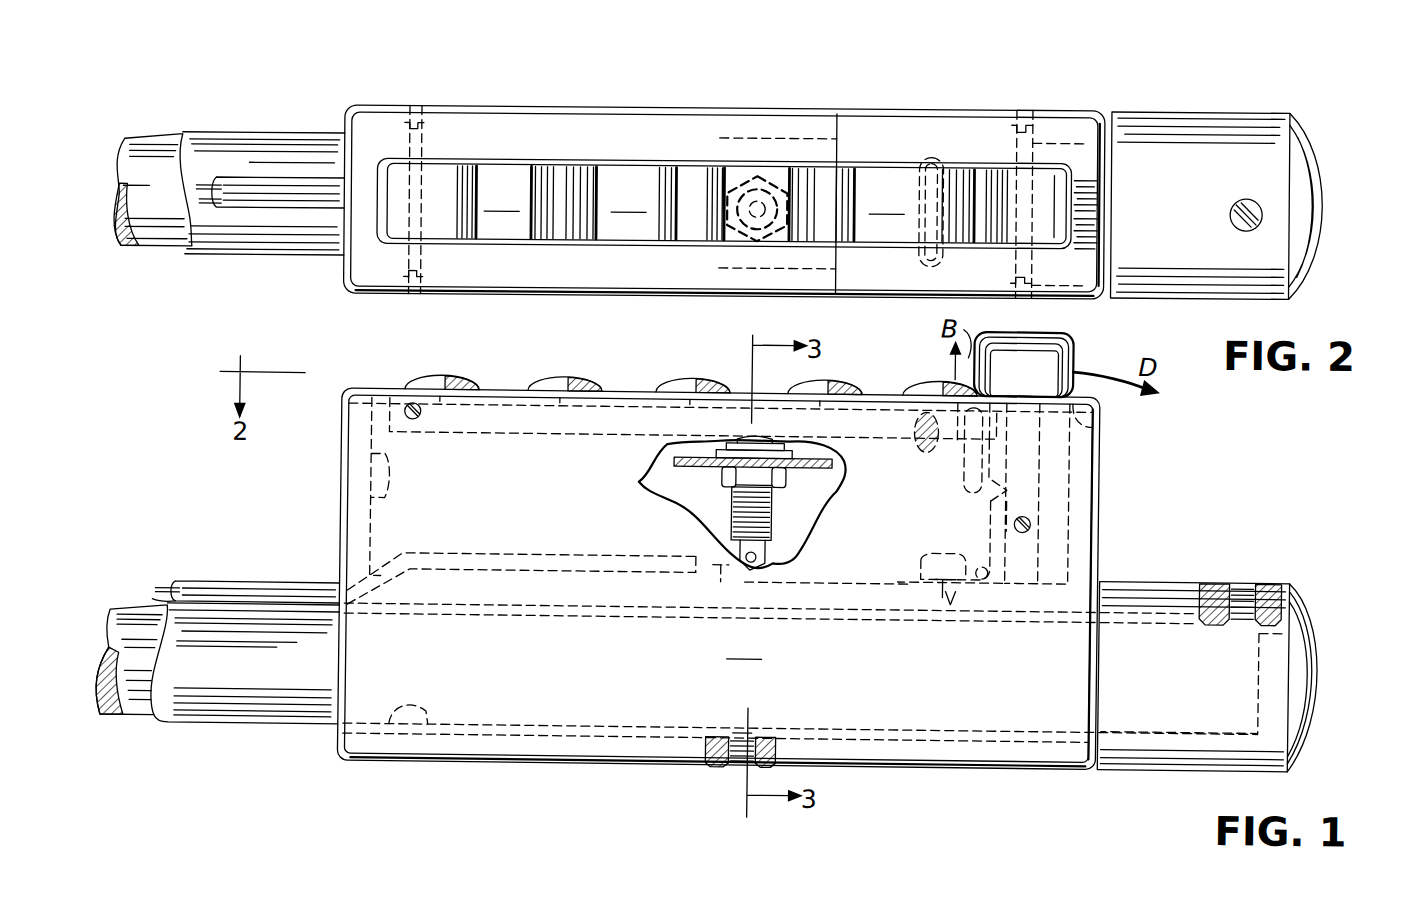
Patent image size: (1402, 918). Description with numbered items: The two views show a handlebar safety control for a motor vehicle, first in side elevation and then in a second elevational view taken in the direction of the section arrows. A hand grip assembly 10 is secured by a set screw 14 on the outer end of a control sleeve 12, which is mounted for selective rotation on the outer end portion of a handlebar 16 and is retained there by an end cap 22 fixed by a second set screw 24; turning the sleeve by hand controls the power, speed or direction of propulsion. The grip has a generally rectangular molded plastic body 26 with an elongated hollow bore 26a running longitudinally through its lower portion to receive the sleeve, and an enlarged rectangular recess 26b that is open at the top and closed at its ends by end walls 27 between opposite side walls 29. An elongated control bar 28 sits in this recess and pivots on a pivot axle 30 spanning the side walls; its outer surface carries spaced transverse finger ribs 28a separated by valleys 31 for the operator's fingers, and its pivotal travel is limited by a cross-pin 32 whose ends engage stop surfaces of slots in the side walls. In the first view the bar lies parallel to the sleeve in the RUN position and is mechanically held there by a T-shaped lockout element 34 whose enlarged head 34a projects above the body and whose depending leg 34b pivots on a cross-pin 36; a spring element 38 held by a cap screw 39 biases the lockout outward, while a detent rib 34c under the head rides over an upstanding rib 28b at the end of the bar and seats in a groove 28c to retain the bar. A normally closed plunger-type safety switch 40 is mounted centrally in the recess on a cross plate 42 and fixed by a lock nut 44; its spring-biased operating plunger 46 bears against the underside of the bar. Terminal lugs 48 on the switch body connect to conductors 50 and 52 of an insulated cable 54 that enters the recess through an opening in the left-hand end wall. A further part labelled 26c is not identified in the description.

In FIG. 2, the hand grip assembly 10 is at (960, 108).
In FIG. 1, the hand grip assembly 10 is at (1100, 510).
In FIG. 2, the control sleeve 12 is at (200, 257).
In FIG. 1, the control sleeve 12 is at (200, 724).
In FIG. 1, the set screw 14 is at (742, 765).
In FIG. 2, the handlebar 16 is at (148, 165).
In FIG. 1, the handlebar 16 is at (137, 700).
In FIG. 2, the end cap 22 is at (1310, 210).
In FIG. 1, the end cap 22 is at (1312, 645).
In FIG. 2, the set screw 24 is at (1262, 205).
In FIG. 1, the set screw 24 is at (1250, 575).
In FIG. 2, the body 26 is at (620, 110).
In FIG. 1, the body 26 is at (799, 580).
In FIG. 1, the hollow bore 26a is at (432, 767).
In FIG. 2, the recess 26b is at (888, 112).
In FIG. 1, the recess 26b is at (373, 500).
In FIG. 1, the housing contact 26c is at (918, 442).
In FIG. 2, the end walls 27 is at (363, 192).
In FIG. 1, the end walls 27 is at (390, 473).
In FIG. 2, the control bar 28 is at (958, 180).
In FIG. 2, the finger ribs 28a is at (438, 195).
In FIG. 1, the finger ribs 28a is at (420, 387).
In FIG. 1, the upstanding rib 28b is at (1093, 410).
In FIG. 1, the groove 28c is at (970, 455).
In FIG. 2, the side walls 29 is at (495, 133).
In FIG. 2, the pivot axle 30 is at (414, 118).
In FIG. 1, the pivot axle 30 is at (416, 419).
In FIG. 2, the valleys 31 is at (732, 176).
In FIG. 1, the valleys 31 is at (485, 388).
In FIG. 2, the cross-pin 32 is at (932, 260).
In FIG. 1, the cross-pin 32 is at (915, 470).
In FIG. 2, the lockout element 34 is at (1080, 212).
In FIG. 1, the lockout element 34 is at (1068, 345).
In FIG. 2, the upper head portion 34a is at (1060, 234).
In FIG. 1, the upper head portion 34a is at (983, 332).
In FIG. 1, the depending leg 34b is at (1045, 473).
In FIG. 1, the detent rib 34c is at (985, 486).
In FIG. 2, the cross-pin 36 is at (1098, 130).
In FIG. 1, the cross-pin 36 is at (1030, 525).
In FIG. 1, the spring element 38 is at (993, 517).
In FIG. 1, the cap screw 39 is at (912, 572).
In FIG. 1, the safety switch 40 is at (722, 498).
In FIG. 1, the cross plate 42 is at (800, 480).
In FIG. 2, the lock nut 44 is at (768, 170).
In FIG. 1, the lock nut 44 is at (723, 473).
In FIG. 1, the operating plunger 46 is at (757, 437).
In FIG. 1, the terminal lugs 48 is at (767, 560).
In FIG. 2, the conductor 50 is at (205, 188).
In FIG. 1, the conductor 50 is at (160, 588).
In FIG. 2, the conductor 52 is at (205, 203).
In FIG. 1, the conductor 52 is at (674, 595).
In FIG. 2, the insulated cable 54 is at (290, 195).
In FIG. 1, the insulated cable 54 is at (225, 583).